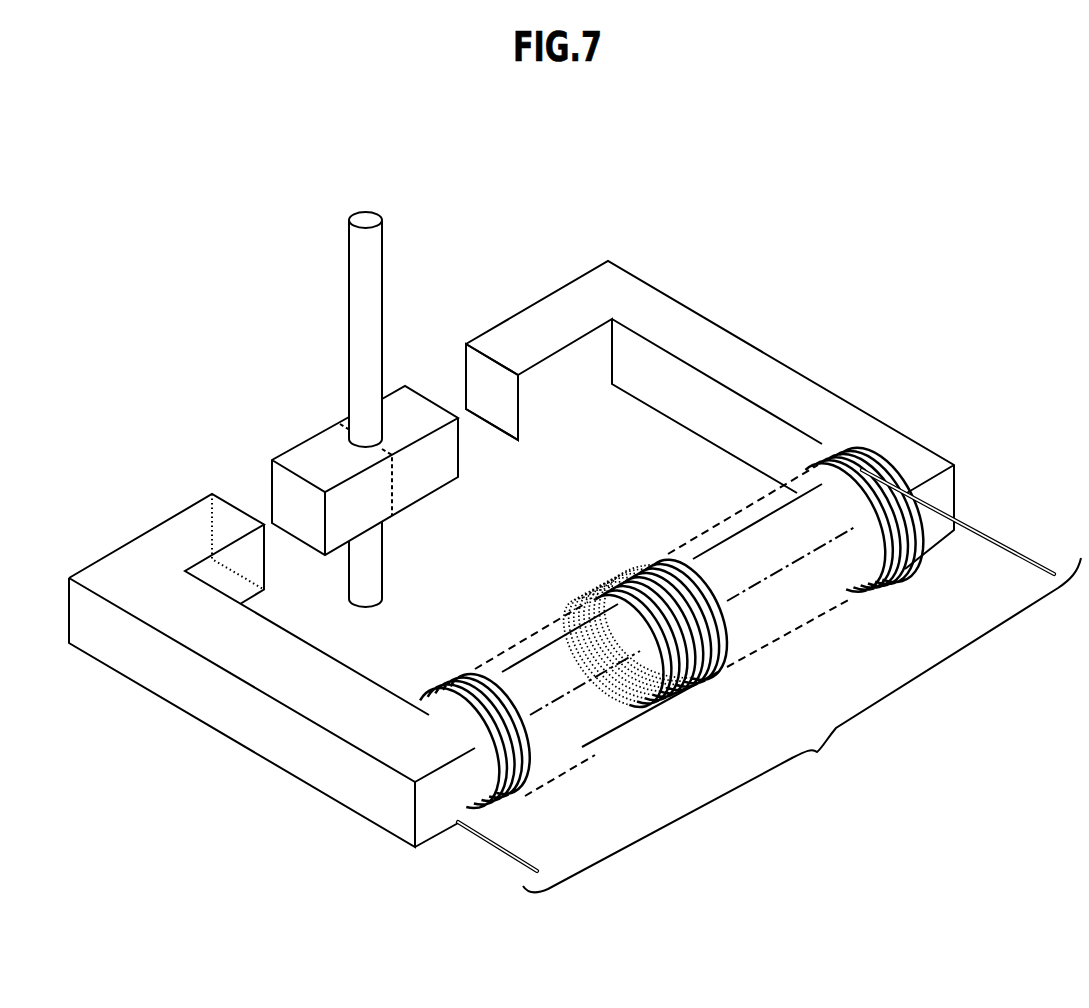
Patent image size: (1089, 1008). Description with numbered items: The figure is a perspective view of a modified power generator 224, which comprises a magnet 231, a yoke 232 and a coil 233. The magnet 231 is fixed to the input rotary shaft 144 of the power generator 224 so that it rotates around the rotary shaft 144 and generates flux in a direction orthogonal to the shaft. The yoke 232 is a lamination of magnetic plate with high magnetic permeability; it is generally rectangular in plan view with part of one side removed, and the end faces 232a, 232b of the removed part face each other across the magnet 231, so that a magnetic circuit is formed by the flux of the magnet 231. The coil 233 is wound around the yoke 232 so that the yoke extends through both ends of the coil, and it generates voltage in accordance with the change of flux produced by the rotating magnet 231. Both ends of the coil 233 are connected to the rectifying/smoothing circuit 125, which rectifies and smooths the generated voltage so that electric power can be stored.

The power generator 224 is at (246, 154).
The input rotary shaft 144 is at (348, 270).
The magnet 231 is at (302, 422).
The yoke 232 is at (733, 320).
The end face of yoke 232a is at (487, 398).
The end face of yoke 232b is at (225, 532).
The coil 233 is at (607, 566).
The rectifying/smoothing circuit 125 is at (802, 725).